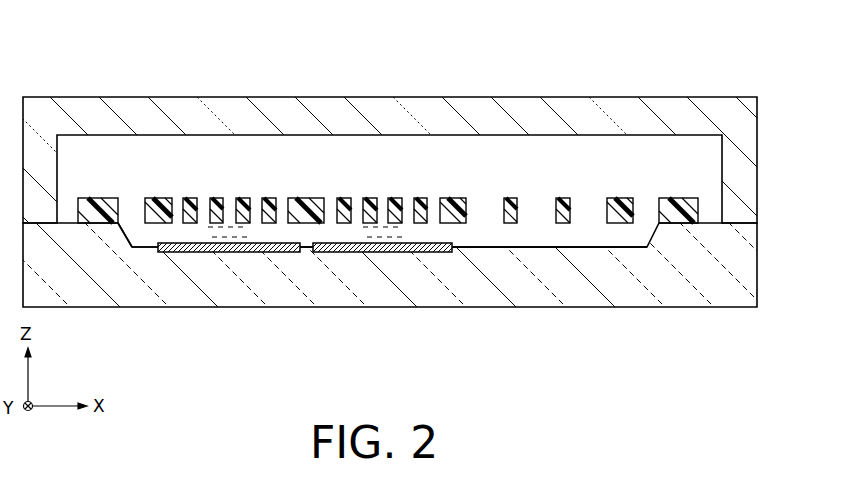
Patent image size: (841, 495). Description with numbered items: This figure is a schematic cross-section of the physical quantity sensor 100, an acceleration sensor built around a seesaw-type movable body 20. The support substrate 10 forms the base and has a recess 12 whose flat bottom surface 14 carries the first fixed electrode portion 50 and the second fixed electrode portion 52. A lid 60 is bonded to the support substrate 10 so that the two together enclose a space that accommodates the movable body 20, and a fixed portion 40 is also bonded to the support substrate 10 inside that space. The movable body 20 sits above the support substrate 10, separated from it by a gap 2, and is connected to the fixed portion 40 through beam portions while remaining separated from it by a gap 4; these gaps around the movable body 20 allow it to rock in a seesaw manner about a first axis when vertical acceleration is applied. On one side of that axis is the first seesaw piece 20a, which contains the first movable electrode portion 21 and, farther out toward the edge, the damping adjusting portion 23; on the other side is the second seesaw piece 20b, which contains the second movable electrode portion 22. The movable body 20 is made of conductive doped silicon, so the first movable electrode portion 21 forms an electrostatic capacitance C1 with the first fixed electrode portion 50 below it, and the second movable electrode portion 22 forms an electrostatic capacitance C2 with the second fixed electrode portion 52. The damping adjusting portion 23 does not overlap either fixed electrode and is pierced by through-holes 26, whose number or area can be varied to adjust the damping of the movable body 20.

The physical quantity sensor 100 is at (722, 77).
The lid 60 is at (77, 113).
The support substrate 10 is at (730, 288).
The recess 12 is at (307, 247).
The surface 14 is at (493, 242).
The fixed portion 40 is at (110, 197).
The gap 4 is at (135, 208).
The movable body 20 is at (488, 62).
The first seesaw piece 20a is at (388, 145).
The second seesaw piece 20b is at (210, 144).
The first movable electrode portion 21 is at (395, 198).
The second movable electrode portion 22 is at (218, 210).
The damping adjusting portion 23 is at (562, 212).
The through-holes 26 is at (490, 207).
The first fixed electrode portion 50 is at (393, 247).
The second fixed electrode portion 52 is at (233, 243).
The electrostatic capacitance C1 is at (370, 203).
The electrostatic capacitance C2 is at (251, 196).
The gap 2 is at (433, 232).